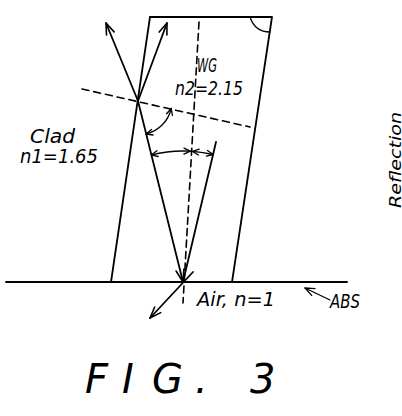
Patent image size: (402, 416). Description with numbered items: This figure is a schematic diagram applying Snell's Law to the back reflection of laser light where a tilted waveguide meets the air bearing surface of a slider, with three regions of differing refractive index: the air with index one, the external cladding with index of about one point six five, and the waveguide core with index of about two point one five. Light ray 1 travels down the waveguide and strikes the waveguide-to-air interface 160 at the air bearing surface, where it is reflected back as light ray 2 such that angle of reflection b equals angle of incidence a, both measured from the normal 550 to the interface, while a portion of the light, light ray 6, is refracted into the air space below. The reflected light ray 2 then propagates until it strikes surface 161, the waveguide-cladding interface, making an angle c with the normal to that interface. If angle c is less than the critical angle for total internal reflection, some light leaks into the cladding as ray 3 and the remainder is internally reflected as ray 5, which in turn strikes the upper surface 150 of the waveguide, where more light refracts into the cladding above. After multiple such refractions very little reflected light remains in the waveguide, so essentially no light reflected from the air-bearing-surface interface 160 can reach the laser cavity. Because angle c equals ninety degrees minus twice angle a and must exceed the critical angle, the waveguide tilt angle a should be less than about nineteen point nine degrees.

The upper surface of the waveguide 150 is at (262, 32).
The waveguide-cladding interface 161 is at (115, 242).
The ABS waveguide-to-air interface 160 is at (293, 282).
The surface normal at ABS 550 is at (188, 221).
The light ray 1 is at (208, 188).
The light ray 2 is at (159, 181).
The ray 3 is at (122, 67).
The ray 5 is at (157, 53).
The light ray 6 is at (165, 302).
The angle of incidence a is at (203, 164).
The angle of reflection b is at (170, 163).
The angle with the normal c is at (159, 121).